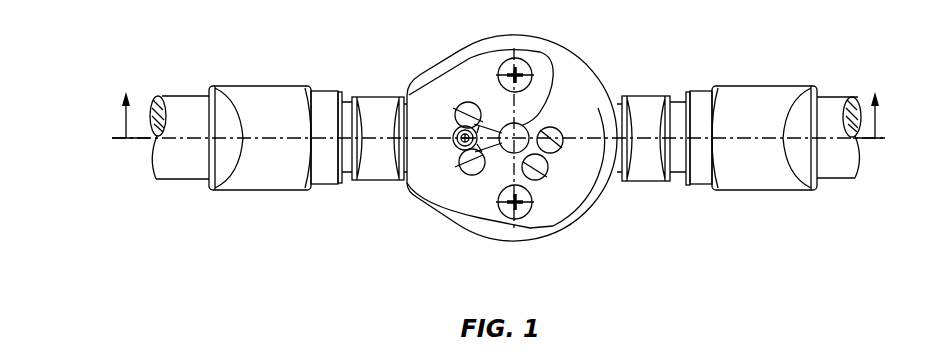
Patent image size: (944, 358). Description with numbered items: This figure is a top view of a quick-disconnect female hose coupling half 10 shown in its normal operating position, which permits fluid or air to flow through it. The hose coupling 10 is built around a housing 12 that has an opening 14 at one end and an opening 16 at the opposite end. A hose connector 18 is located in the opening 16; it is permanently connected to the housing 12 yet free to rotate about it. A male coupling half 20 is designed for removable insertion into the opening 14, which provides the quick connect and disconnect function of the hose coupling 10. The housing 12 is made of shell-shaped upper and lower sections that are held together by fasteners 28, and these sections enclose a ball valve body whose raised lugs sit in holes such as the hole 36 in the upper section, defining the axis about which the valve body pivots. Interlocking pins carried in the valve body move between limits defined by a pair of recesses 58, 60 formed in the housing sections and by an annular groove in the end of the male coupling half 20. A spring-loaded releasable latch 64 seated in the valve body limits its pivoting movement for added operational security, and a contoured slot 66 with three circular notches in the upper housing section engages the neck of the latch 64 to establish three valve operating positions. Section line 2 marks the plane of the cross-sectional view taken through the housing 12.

The section line 2— 2 is at (498, 101).
The quick-disconnect female hose coupling half 10 is at (421, 40).
The housing 12 is at (476, 52).
The opening 14 is at (604, 85).
The opening 16 is at (407, 87).
The hose connector 18 is at (375, 170).
The male coupling half 20 is at (657, 170).
The fasteners 28 is at (530, 58).
The hole 36 is at (503, 143).
The recess 58 is at (544, 178).
The recess 60 is at (561, 148).
The releasable latch 64 is at (462, 156).
The contoured slot 66 is at (470, 176).